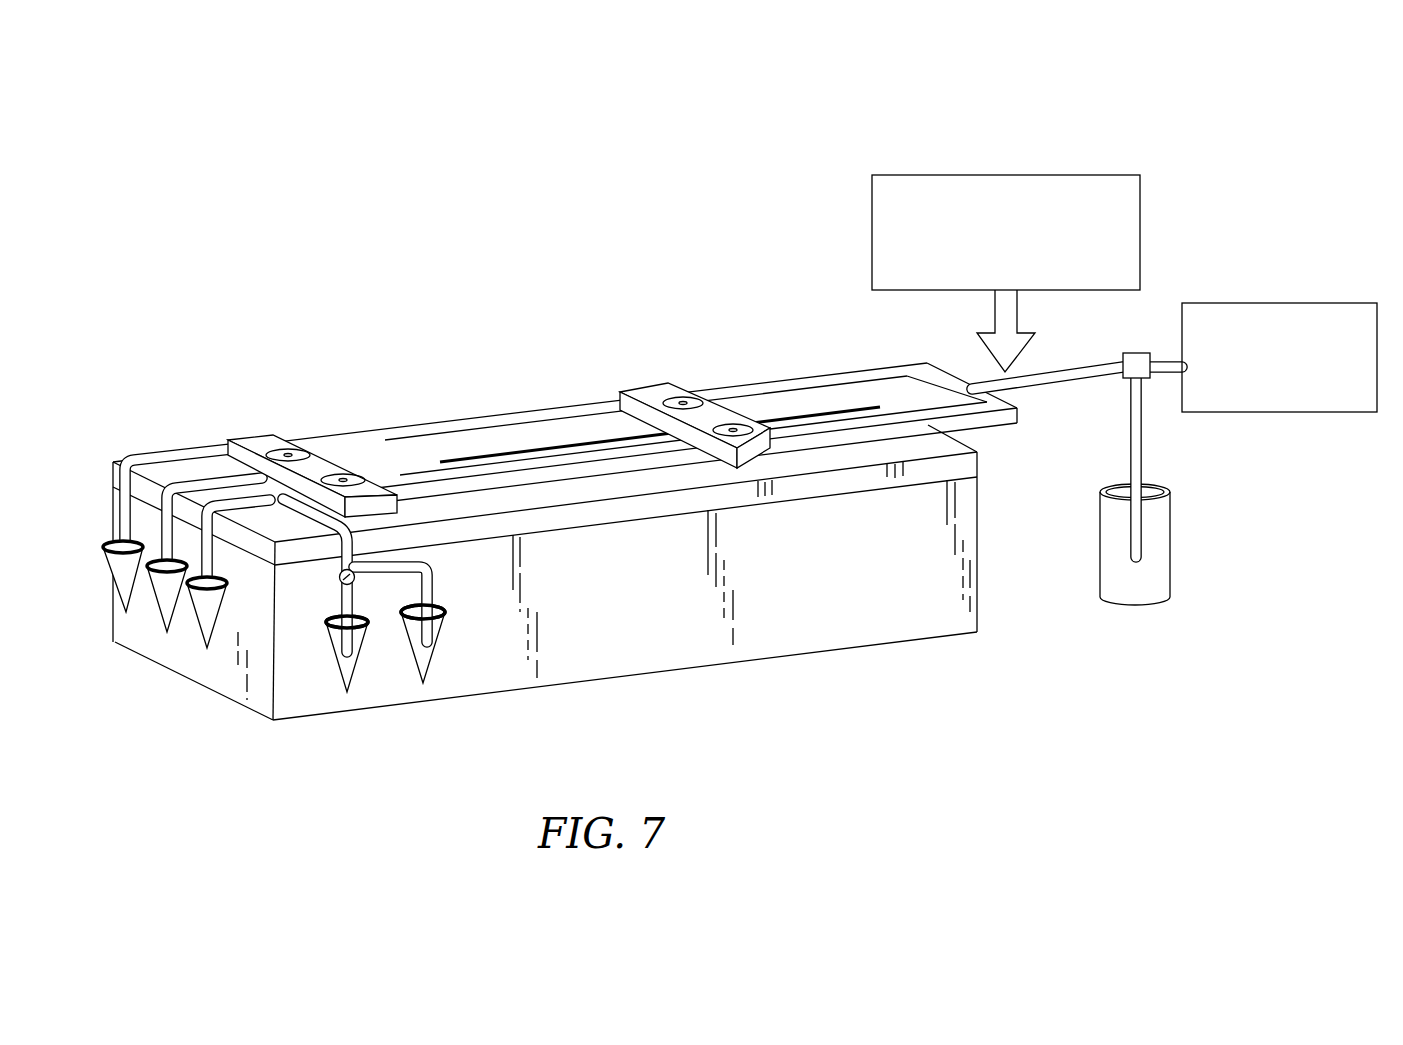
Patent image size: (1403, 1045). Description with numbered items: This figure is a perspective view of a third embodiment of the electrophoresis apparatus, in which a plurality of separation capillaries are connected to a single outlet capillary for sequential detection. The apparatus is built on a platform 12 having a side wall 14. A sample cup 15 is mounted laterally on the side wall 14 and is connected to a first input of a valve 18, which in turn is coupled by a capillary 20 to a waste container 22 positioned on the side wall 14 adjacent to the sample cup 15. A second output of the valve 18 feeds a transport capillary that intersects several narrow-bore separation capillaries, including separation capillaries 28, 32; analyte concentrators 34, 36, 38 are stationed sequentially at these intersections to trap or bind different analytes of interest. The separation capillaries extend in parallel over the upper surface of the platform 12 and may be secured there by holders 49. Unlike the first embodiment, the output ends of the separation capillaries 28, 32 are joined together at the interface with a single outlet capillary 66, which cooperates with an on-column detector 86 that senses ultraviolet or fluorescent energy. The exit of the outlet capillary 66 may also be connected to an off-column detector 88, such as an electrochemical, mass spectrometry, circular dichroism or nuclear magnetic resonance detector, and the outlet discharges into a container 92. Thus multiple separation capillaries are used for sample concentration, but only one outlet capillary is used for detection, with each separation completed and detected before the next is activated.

The platform 12 is at (977, 527).
The side wall 14 is at (620, 668).
The sample cup 15 is at (338, 666).
The valve 18 is at (340, 579).
The capillary 20 is at (430, 572).
The waste container 22 is at (428, 661).
The separation capillary 28 is at (257, 507).
The separation capillary 32 is at (134, 456).
The analyte concentrator 34 is at (285, 502).
The analyte concentrator 36 is at (240, 477).
The analyte concentrator 38 is at (213, 455).
The holder 49 is at (657, 395).
The outlet capillary 66 is at (1110, 380).
The on-column detector 86 is at (1122, 185).
The off-column detector 88 is at (1352, 310).
The collection container 92 is at (1145, 578).